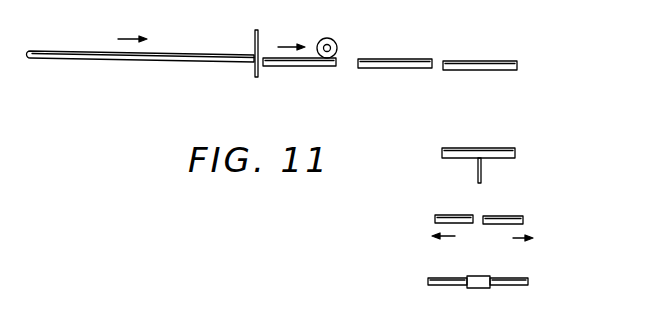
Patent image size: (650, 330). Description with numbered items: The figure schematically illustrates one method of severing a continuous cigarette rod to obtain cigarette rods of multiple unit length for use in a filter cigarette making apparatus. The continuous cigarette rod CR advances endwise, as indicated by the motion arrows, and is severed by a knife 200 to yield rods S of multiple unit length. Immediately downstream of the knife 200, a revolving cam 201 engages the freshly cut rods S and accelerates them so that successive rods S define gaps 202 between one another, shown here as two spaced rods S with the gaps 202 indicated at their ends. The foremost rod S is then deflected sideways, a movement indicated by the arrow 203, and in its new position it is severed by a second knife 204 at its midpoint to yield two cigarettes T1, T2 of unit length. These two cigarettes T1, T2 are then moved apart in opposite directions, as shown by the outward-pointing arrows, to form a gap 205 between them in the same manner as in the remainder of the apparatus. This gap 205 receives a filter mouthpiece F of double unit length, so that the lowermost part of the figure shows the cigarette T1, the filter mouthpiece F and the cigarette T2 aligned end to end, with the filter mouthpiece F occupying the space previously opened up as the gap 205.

The continuous cigarette rod CR is at (58, 54).
The knife 200 is at (264, 20).
The revolving cam 201 is at (334, 40).
The cigarette rod of multiple unit length S is at (301, 67).
The gap 202 is at (436, 73).
The arrow 203 is at (480, 92).
The knife 204 is at (482, 170).
The cigarette of unit length T1 is at (433, 217).
The cigarette of unit length T2 is at (525, 219).
The gap 205 is at (467, 259).
The filter mouthpiece F is at (480, 288).